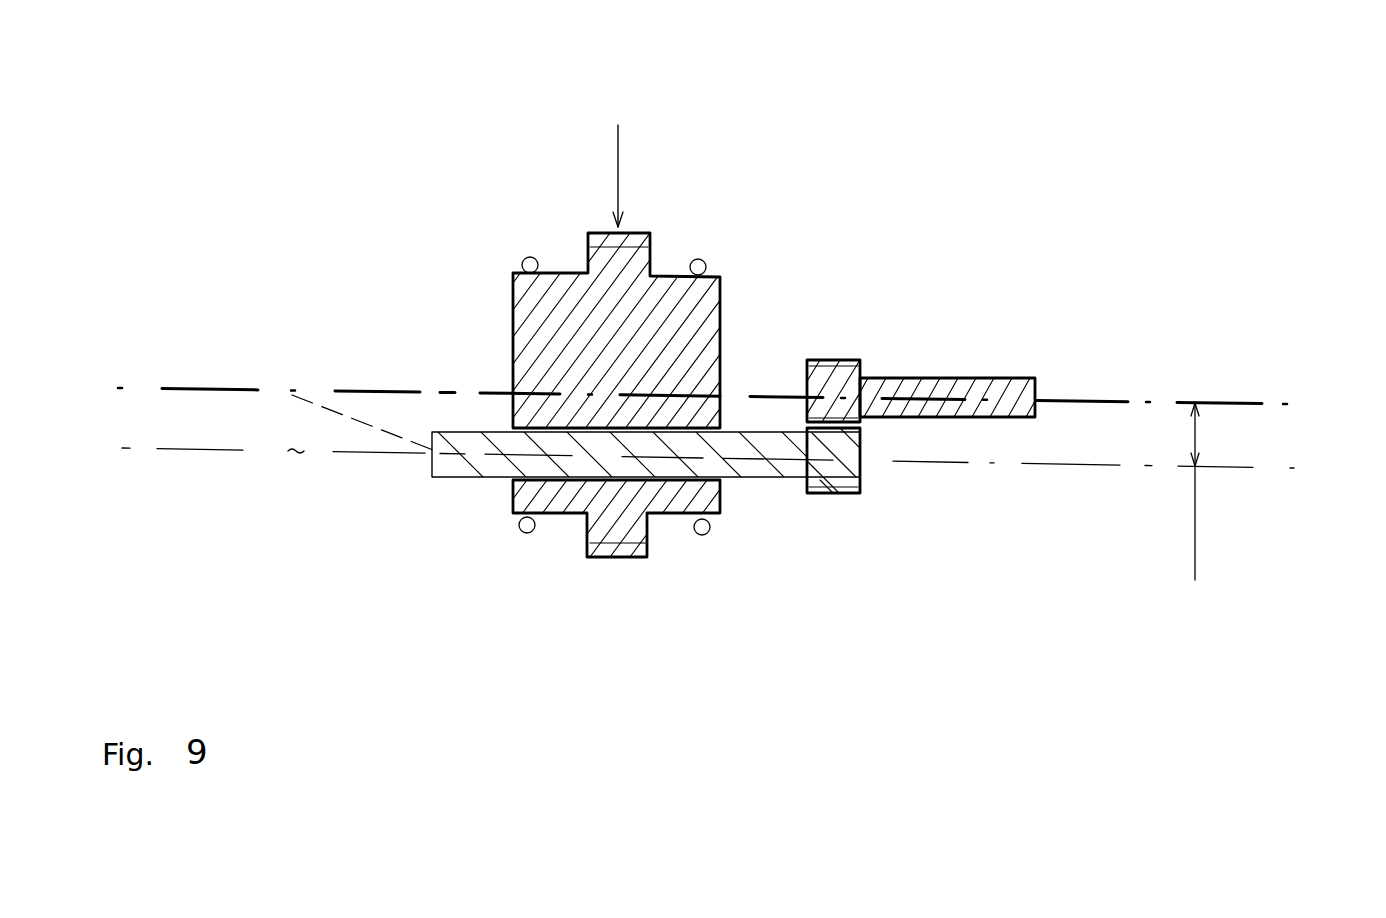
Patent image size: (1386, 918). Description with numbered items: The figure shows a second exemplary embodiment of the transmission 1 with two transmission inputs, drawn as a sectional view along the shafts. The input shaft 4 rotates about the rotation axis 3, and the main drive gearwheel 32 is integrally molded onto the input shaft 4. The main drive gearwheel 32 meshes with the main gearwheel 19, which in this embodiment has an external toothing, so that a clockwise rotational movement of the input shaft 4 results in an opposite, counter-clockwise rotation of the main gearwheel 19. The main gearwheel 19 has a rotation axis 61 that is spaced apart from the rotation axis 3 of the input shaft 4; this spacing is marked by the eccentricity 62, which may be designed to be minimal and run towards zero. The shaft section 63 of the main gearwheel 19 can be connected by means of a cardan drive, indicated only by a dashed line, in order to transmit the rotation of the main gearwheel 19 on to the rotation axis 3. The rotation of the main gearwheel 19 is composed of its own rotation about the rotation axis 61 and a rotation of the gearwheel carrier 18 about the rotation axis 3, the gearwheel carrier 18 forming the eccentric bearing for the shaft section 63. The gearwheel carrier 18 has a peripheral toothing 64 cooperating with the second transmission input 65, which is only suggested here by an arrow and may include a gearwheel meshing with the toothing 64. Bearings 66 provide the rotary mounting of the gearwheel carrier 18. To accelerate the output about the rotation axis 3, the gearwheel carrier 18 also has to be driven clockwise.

The adjusting device 1 is at (952, 133).
The rotation axis 3 is at (1218, 403).
The input shaft 4 is at (970, 378).
The gearwheel carrier 18 is at (520, 302).
The main gearwheel 19 is at (852, 495).
The main drive gearwheel 32 is at (862, 357).
The rotation axis 61 is at (188, 449).
The eccentricity 62 is at (1172, 498).
The shaft section 63 is at (463, 468).
The peripheral toothing 64 is at (635, 240).
The second transmission input 65 is at (645, 103).
The bearings 66 is at (523, 533).